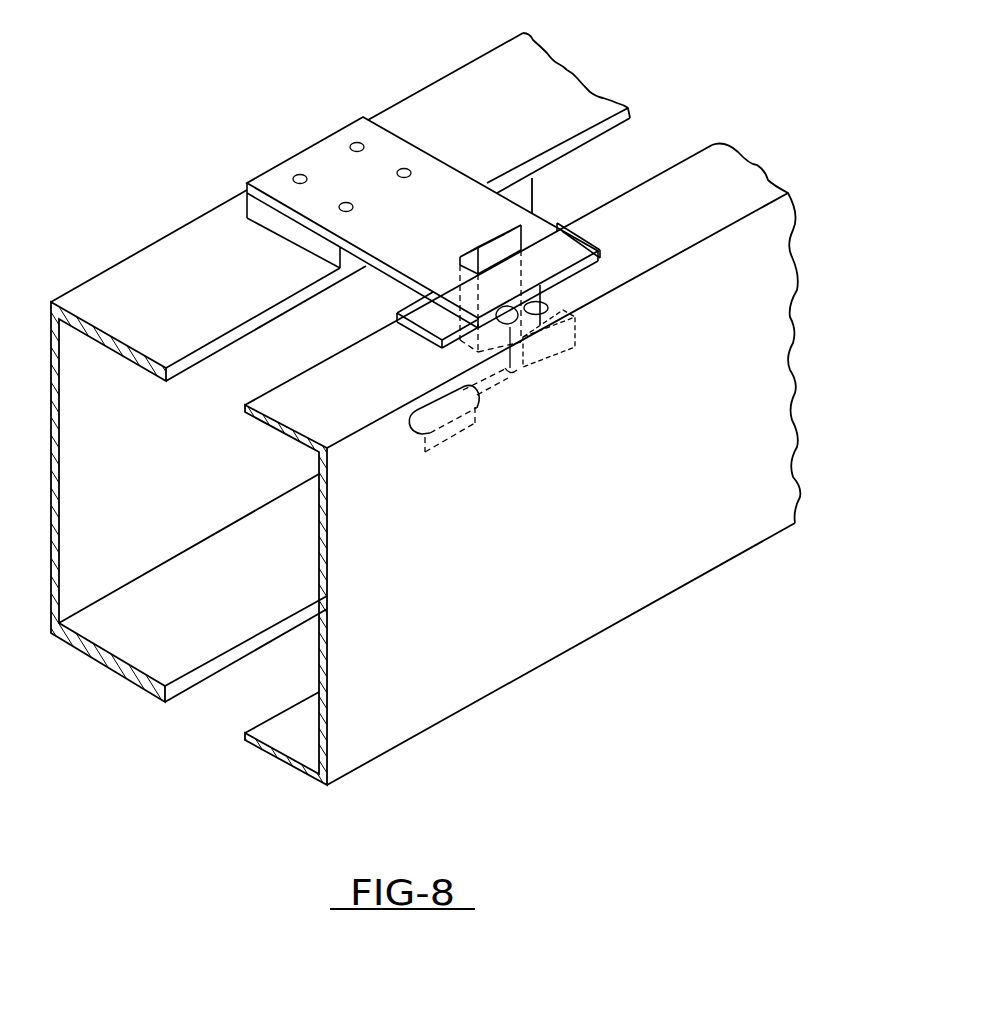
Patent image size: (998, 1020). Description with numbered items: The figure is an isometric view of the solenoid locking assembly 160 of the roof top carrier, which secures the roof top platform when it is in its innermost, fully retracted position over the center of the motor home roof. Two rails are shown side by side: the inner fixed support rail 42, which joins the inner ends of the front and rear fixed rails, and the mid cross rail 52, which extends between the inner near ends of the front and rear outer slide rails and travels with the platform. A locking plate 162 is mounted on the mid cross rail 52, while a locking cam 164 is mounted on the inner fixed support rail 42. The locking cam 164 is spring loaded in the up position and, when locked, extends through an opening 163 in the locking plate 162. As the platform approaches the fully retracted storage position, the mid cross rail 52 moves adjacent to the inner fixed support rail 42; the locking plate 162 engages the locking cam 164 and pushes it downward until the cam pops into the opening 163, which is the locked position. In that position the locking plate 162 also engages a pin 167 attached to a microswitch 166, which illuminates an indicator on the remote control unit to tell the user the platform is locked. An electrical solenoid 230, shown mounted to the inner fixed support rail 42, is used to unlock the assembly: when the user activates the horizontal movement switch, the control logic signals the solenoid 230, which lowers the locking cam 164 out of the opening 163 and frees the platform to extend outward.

The inner fixed support rail 42 is at (758, 420).
The mid cross rail 52 is at (540, 93).
The solenoid locking assembly 160 is at (507, 343).
The locking plate 162 is at (290, 197).
The opening 163 is at (396, 298).
The locking cam 164 is at (538, 222).
The microswitch 166 is at (558, 347).
The pin 167 is at (545, 303).
The solenoid 230 is at (460, 407).